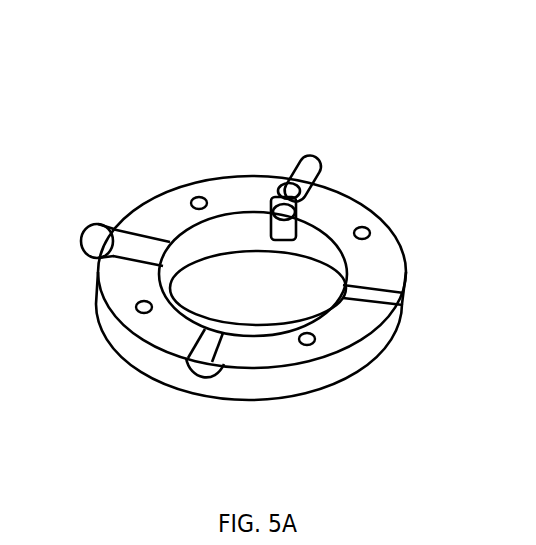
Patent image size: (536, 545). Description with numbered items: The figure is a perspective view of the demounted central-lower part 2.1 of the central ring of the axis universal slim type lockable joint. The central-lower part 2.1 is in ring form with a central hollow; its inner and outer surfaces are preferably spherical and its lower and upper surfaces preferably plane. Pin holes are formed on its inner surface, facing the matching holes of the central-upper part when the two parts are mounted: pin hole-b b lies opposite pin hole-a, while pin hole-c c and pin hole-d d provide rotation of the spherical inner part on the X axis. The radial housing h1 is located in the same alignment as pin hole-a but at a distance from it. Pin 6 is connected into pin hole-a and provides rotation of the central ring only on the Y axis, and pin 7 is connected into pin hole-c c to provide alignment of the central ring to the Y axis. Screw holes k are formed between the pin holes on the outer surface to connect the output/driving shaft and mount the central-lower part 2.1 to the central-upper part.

The central-lower part 2.1 is at (163, 95).
The pin- 6 is at (316, 152).
The pin- 7 is at (93, 228).
The radial housing-1 h1 is at (272, 196).
The screw hole k is at (371, 225).
The pin hole- c is at (127, 252).
The pin hole- d is at (396, 300).
The pin hole- b is at (206, 361).